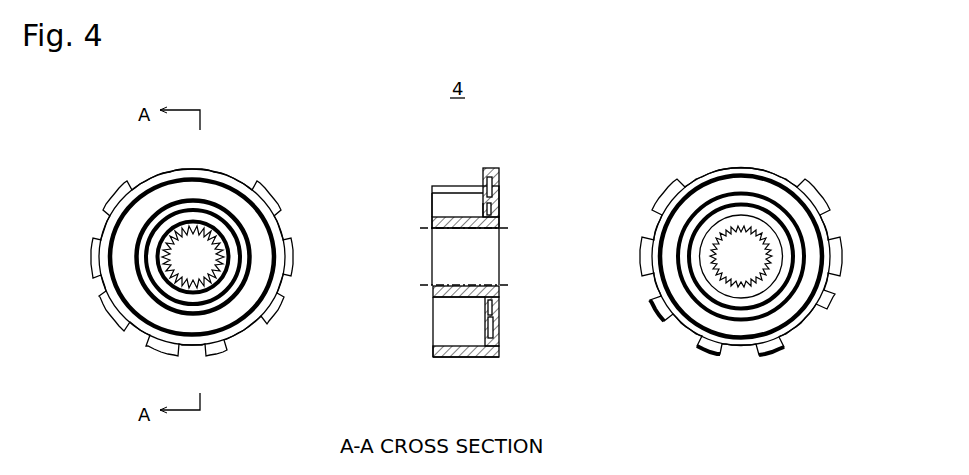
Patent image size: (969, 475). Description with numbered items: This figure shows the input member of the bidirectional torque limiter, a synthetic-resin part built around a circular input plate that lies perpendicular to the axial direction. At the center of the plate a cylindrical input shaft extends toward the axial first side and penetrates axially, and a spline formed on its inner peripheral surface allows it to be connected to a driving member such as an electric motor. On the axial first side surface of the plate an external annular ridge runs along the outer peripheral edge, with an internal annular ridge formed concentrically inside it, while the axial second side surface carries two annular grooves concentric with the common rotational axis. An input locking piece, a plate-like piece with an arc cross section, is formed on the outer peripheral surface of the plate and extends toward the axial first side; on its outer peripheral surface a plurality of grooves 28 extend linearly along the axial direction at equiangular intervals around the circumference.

The grooves 28 is at (646, 275).